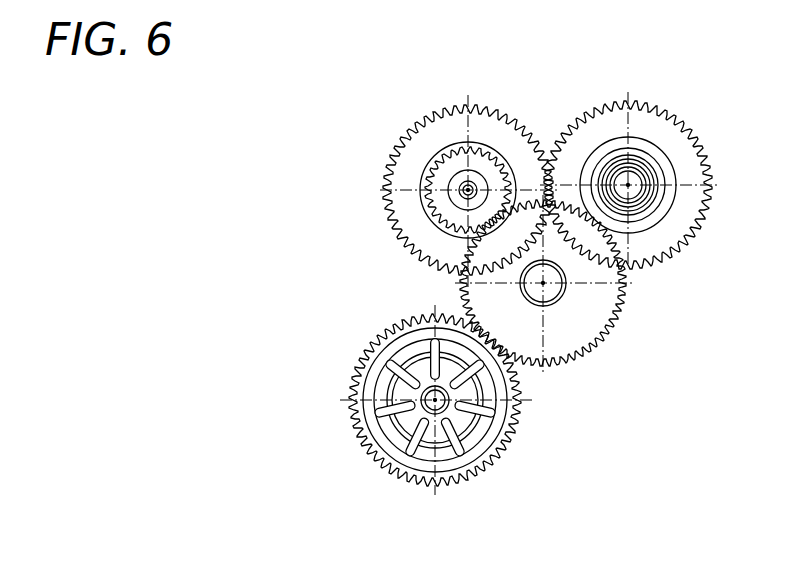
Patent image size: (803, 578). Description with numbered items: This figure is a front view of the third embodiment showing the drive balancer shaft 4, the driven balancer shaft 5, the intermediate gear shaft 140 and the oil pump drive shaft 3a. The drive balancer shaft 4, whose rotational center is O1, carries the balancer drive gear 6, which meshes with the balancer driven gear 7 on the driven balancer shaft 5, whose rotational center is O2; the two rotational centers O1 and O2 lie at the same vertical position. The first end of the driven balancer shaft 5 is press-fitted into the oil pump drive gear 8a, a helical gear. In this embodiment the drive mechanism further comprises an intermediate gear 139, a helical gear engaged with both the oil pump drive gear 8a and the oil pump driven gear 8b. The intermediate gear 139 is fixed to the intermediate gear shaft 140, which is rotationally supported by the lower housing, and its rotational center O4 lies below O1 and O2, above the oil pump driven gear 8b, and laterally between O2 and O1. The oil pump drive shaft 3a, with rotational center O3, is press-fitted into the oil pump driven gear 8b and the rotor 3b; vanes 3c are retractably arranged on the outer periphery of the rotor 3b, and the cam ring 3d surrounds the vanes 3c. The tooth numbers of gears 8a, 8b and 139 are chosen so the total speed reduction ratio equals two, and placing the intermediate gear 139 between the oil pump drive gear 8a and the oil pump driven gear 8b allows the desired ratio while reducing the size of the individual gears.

The balancer driven gear 7 is at (418, 126).
The oil pump drive gear 8a is at (478, 157).
The driven balancer shaft 5 is at (449, 187).
The rotational center of the driven balancer shaft O2 is at (453, 207).
The balancer drive gear 6 is at (677, 118).
The drive balancer shaft 4 is at (650, 163).
The rotational center of the drive balancer shaft O1 is at (652, 198).
The intermediate gear 139 is at (628, 299).
The intermediate gear shaft 140 is at (552, 305).
The rotational center of the intermediate gear shaft O4 is at (544, 284).
The oil pump driven gear 8b is at (517, 424).
The oil pump drive shaft 3a is at (484, 444).
The rotor 3b is at (436, 435).
The vanes 3c is at (372, 414).
The cam ring 3d is at (464, 460).
The rotational center of the oil pump drive shaft O3 is at (434, 400).